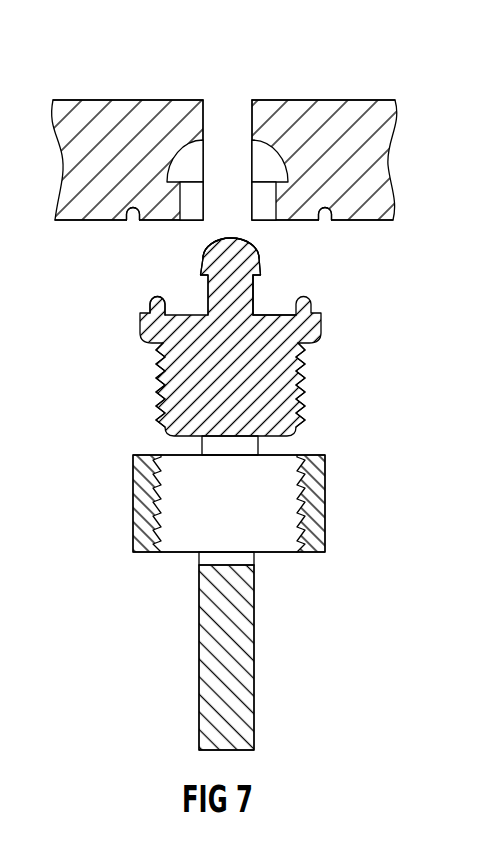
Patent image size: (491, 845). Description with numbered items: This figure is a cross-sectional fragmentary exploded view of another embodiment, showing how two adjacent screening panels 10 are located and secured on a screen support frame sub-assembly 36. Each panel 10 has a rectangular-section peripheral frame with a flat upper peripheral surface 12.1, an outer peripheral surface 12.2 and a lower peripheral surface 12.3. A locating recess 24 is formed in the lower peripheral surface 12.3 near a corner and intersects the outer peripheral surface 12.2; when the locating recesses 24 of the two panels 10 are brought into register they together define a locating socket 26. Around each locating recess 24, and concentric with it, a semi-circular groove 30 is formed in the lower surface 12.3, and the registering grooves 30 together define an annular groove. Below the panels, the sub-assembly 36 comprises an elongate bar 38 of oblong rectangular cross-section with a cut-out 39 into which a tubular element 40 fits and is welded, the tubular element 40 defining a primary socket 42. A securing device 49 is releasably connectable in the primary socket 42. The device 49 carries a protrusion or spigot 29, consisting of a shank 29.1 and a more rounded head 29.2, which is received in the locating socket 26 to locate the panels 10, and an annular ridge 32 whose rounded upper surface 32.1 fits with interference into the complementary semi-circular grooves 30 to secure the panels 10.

The screening panel 10 is at (152, 69).
The upper peripheral surface 12.1 is at (109, 87).
The outer peripheral surface 12.2 is at (243, 90).
The lower peripheral surface 12.3 is at (72, 231).
The locating recess 24 is at (189, 202).
The locating socket 26 is at (260, 157).
The semi-circular groove 30 is at (120, 231).
The protrusion or spigot 29 is at (274, 274).
The shank 29.1 is at (254, 306).
The rounded head 29.2 is at (243, 241).
The annular ridge 32 is at (150, 303).
The rounded upper surface 32.1 is at (136, 296).
The securing device 49 is at (140, 391).
The screen support frame sub-assembly 36 is at (350, 520).
The tubular element 40 is at (325, 502).
The primary socket 42 is at (181, 531).
The elongate bar 38 is at (254, 672).
The cut-out 39 is at (269, 562).